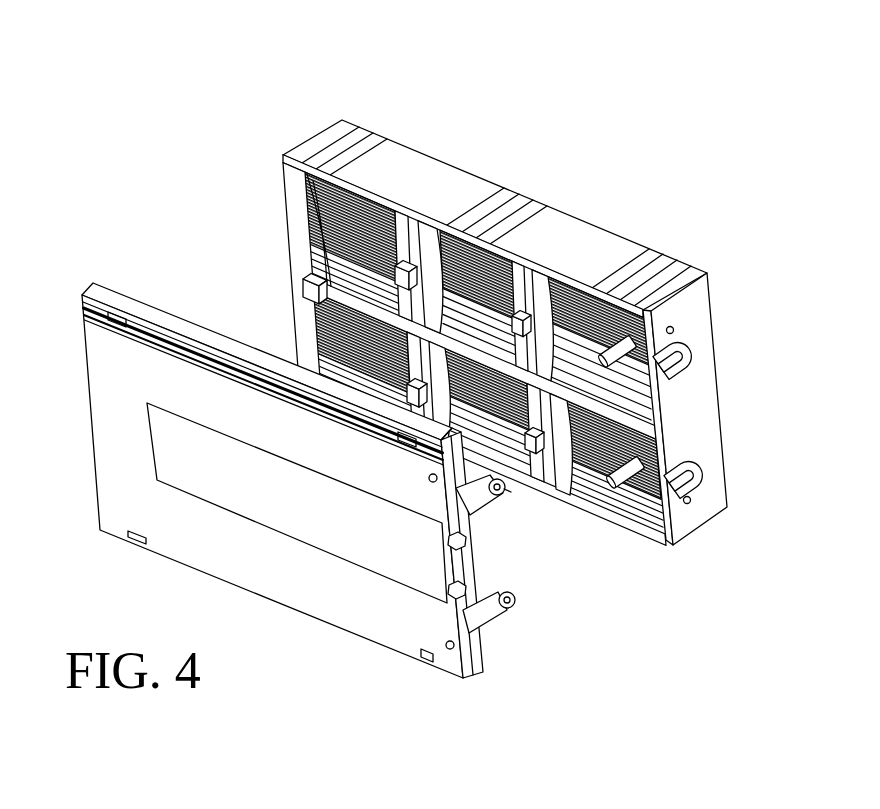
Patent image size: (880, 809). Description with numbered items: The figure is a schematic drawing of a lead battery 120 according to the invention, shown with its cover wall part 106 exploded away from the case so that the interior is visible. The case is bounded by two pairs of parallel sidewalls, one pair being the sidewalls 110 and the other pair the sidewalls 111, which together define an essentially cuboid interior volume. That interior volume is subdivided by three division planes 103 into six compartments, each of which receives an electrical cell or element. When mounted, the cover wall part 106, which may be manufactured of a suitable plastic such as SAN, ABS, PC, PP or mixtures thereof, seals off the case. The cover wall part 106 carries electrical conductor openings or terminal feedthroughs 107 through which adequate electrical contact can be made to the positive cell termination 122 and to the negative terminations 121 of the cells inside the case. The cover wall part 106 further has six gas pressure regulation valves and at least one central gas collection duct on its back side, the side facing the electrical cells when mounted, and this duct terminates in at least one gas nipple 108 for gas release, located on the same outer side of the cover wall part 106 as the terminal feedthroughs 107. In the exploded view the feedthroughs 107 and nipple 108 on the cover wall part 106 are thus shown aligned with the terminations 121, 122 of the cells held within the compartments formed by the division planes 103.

The division plane 103 is at (413, 234).
The cover wall part 106 is at (285, 430).
The terminal feedthrough 107 is at (507, 491).
The gas nipple 108 is at (472, 540).
The sidewall 110 is at (721, 409).
The sidewall 111 is at (575, 249).
The battery 120 is at (490, 352).
The negative termination 121 is at (660, 328).
The positive cell termination 122 is at (640, 494).